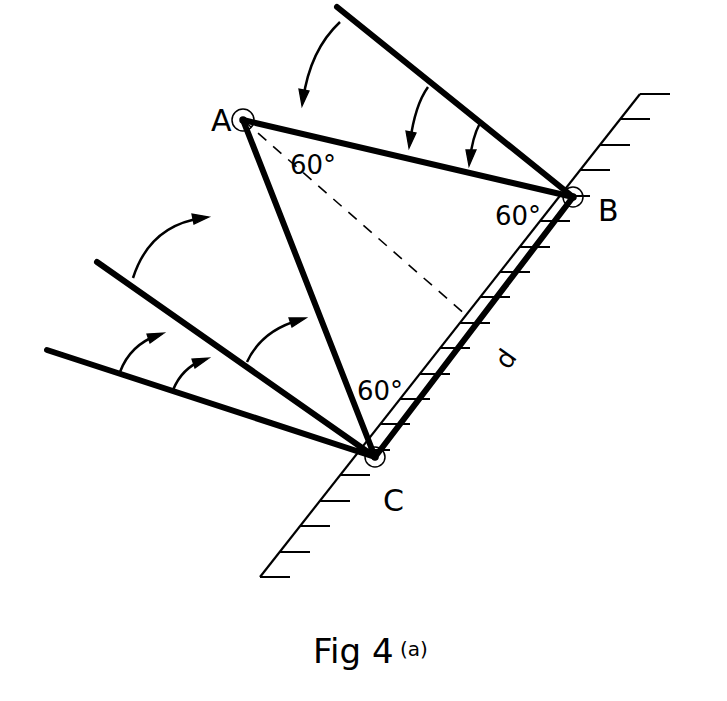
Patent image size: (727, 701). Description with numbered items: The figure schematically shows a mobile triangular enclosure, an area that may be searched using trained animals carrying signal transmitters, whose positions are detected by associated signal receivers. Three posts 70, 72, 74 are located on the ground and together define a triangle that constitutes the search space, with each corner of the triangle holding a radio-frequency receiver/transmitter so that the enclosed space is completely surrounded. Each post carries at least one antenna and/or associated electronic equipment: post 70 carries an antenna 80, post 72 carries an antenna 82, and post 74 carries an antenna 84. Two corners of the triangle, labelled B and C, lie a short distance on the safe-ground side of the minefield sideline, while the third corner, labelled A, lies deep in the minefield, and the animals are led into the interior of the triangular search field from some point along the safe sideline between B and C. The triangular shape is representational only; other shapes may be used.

The post 70 is at (238, 112).
The post 72 is at (581, 207).
The post 74 is at (386, 454).
The antenna 80 is at (236, 128).
The antenna 82 is at (567, 215).
The antenna 84 is at (383, 467).